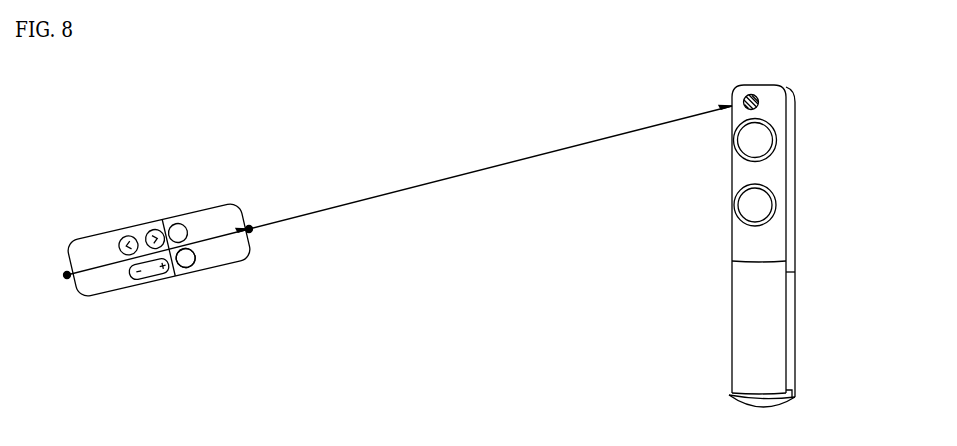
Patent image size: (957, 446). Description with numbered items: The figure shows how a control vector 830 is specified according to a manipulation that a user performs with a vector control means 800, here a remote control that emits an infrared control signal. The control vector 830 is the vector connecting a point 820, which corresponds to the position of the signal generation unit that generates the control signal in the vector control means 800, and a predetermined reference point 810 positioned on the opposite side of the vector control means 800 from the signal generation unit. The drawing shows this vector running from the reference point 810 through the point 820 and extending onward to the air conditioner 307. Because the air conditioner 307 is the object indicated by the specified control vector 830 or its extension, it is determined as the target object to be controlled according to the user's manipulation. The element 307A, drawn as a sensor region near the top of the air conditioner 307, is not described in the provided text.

The vector control means 800 is at (95, 238).
The predetermined reference point 810 is at (67, 280).
The point corresponding to a position of a signal generation unit 820 is at (252, 233).
The control vector 830 is at (220, 263).
The air conditioner 307 is at (745, 327).
The sensor of speaker 307A is at (758, 104).